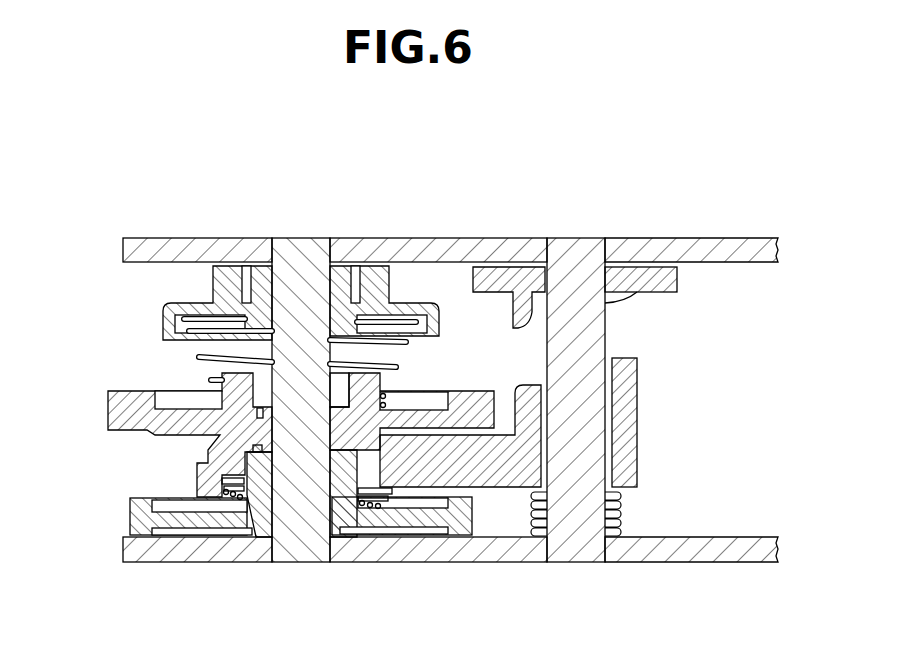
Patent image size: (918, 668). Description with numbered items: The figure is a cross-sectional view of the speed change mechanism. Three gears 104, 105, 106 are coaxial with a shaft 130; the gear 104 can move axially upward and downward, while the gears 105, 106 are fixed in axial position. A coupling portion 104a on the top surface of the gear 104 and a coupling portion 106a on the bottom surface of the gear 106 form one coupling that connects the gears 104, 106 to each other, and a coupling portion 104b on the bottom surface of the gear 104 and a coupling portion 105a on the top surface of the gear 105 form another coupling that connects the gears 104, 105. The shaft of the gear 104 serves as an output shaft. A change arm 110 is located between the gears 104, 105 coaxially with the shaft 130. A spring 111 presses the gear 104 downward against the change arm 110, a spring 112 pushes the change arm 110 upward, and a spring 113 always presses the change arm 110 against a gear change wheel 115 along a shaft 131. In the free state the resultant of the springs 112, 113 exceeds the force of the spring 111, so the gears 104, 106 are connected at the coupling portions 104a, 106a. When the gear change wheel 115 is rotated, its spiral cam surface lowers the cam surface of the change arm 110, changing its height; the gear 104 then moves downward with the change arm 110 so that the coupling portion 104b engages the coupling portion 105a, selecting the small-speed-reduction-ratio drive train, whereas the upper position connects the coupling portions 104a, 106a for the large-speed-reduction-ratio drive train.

The gear 104 is at (123, 410).
The coupling portion 104a is at (337, 380).
The coupling portion 104b is at (253, 470).
The gear 105 is at (130, 517).
The coupling portion 105a is at (337, 453).
The gear 106 is at (218, 283).
The coupling portion 106a is at (245, 340).
The change arm 110 is at (500, 487).
The spring 111 is at (199, 359).
The spring 112 is at (240, 499).
The spring 113 is at (622, 515).
The gear change wheel 115 is at (657, 268).
The shaft 130 is at (300, 250).
The shaft 131 is at (578, 245).